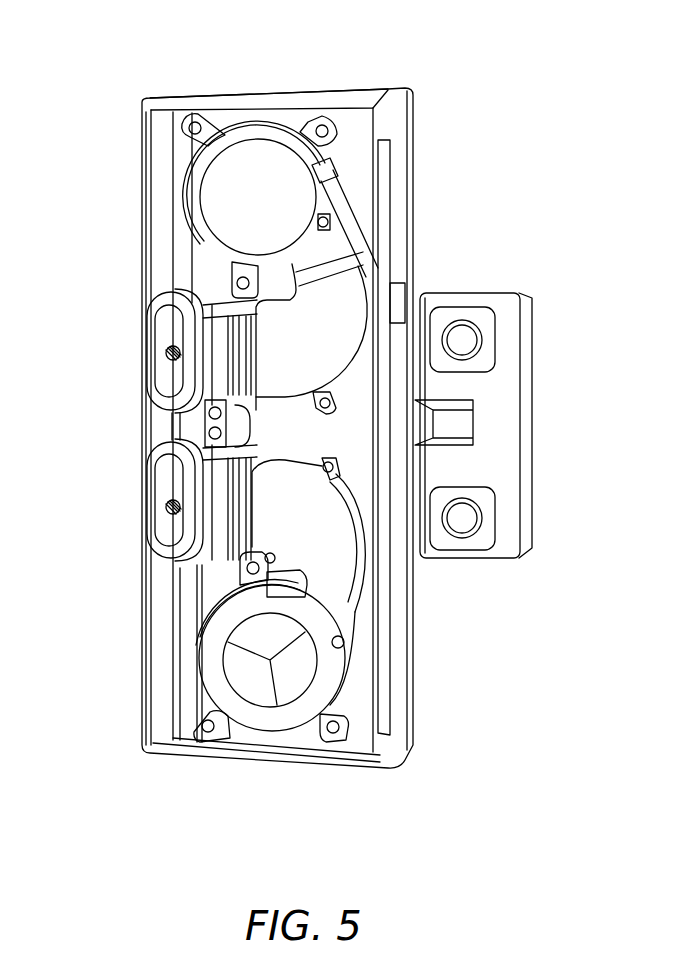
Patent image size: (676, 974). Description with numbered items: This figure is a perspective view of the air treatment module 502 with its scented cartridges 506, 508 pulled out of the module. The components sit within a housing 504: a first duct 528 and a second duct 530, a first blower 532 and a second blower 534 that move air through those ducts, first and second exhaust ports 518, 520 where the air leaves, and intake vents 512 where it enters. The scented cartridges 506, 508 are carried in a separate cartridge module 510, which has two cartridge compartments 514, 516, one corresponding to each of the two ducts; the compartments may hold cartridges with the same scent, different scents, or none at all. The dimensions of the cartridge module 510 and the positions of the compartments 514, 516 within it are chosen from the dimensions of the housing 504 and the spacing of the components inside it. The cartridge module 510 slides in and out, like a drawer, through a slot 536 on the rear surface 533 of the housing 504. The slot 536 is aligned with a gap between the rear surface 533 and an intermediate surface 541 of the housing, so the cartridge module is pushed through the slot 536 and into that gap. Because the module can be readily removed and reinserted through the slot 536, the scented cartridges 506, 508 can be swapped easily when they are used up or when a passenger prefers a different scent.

The air treatment module 502 is at (512, 104).
The housing 504 is at (380, 131).
The scented cartridge 506 is at (462, 332).
The scented cartridge 508 is at (475, 518).
The cartridge module 510 is at (527, 342).
The intake vents 512 is at (153, 282).
The cartridge compartment 514 is at (507, 332).
The cartridge compartment 516 is at (497, 527).
The first exhaust port 518 is at (172, 353).
The second exhaust port 520 is at (180, 532).
The first duct 528 is at (342, 313).
The second duct 530 is at (339, 558).
The first blower 532 is at (254, 175).
The rear surface 533 is at (273, 92).
The second blower 534 is at (284, 684).
The slot 536 is at (401, 539).
The intermediate surface 541 is at (357, 700).